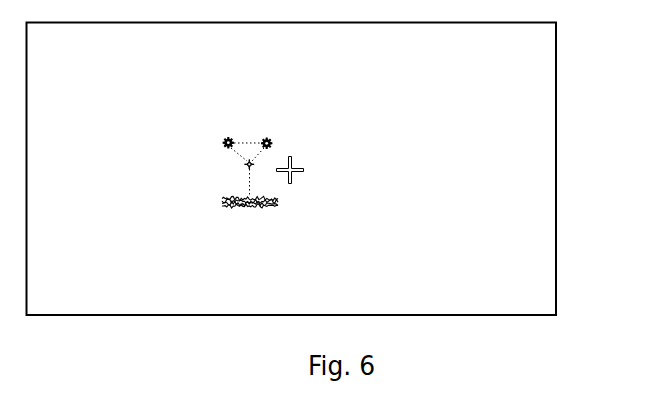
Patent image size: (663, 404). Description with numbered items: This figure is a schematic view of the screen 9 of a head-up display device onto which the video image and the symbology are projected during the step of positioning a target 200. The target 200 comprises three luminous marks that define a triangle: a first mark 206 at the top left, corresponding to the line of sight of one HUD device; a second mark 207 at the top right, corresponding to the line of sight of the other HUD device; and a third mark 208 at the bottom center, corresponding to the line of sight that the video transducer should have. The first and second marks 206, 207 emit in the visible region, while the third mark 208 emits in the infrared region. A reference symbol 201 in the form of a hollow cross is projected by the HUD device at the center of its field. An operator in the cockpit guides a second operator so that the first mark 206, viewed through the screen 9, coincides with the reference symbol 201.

The screen 9 is at (556, 235).
The target 200 is at (222, 201).
The reference symbol 201 is at (304, 170).
The first mark 206 is at (223, 140).
The second mark 207 is at (271, 140).
The third mark 208 is at (246, 166).